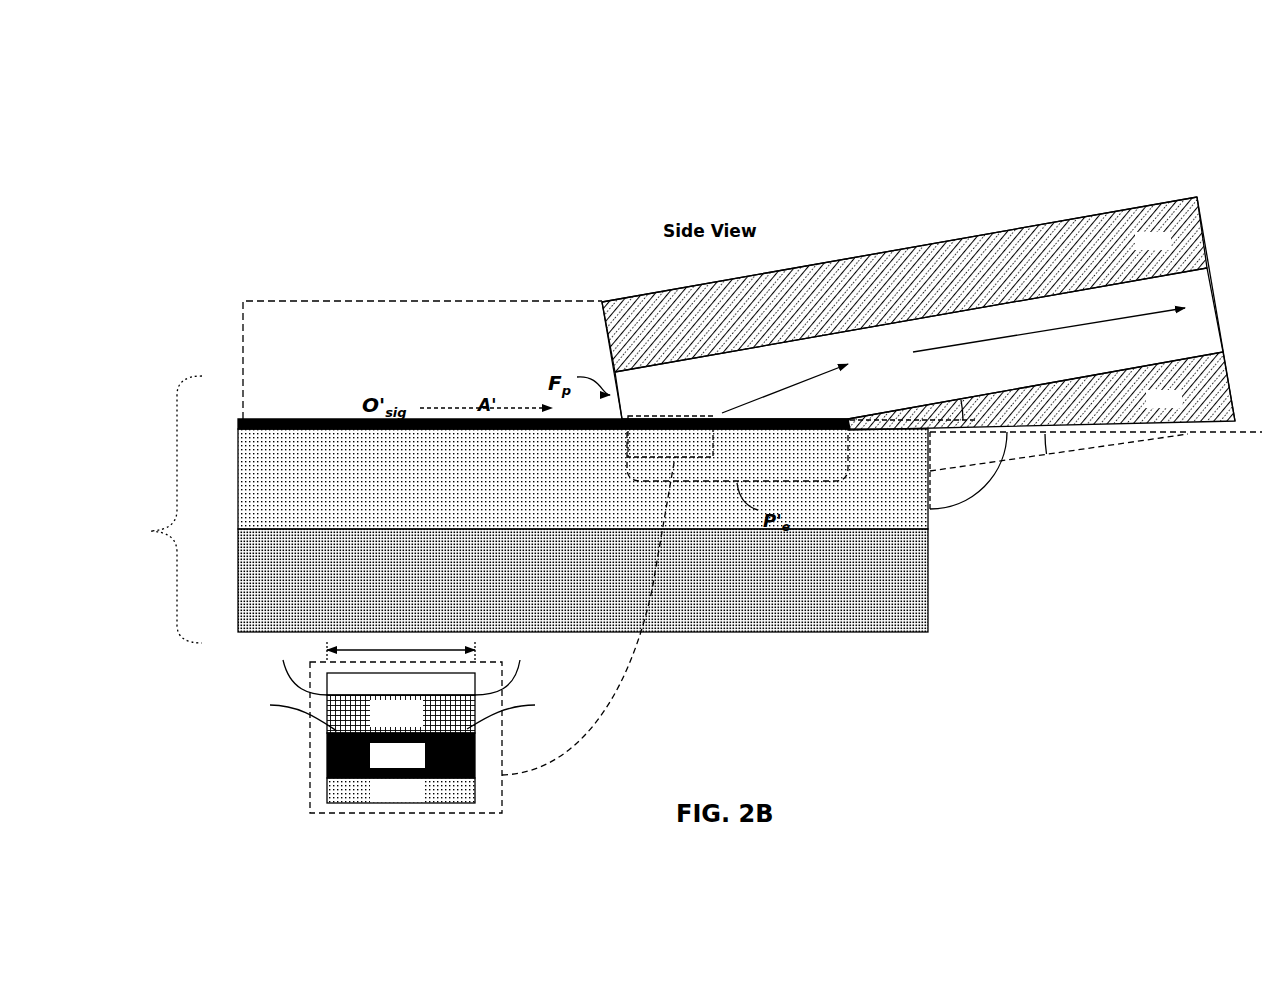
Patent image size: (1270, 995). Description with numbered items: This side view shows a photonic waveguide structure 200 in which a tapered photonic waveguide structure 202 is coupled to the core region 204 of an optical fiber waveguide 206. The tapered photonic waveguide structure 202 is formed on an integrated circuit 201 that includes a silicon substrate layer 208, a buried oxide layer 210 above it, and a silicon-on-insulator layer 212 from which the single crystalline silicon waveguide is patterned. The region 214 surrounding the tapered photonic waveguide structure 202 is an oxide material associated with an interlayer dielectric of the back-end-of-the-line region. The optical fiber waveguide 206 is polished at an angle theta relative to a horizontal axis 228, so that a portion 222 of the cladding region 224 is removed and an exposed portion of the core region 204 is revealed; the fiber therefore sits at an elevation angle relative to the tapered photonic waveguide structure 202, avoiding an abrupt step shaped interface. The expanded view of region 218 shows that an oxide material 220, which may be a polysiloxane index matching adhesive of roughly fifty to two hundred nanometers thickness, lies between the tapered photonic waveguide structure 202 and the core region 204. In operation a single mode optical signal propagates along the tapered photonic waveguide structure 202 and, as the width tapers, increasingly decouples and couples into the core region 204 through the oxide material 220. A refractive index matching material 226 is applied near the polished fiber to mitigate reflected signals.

The photonic waveguide structure 200 is at (247, 112).
The integrated circuit 201 is at (168, 509).
The tapered photonic waveguide structure 202 is at (306, 419).
The core region 204 is at (781, 446).
The optical fiber waveguide 206 is at (606, 294).
The silicon substrate layer 208 is at (233, 589).
The buried oxide layer 210 is at (233, 502).
The silicon-on-insulator layer 212 is at (232, 424).
The region surrounding the tapered photonic waveguide structure 214 is at (343, 301).
The expanded view region 218 is at (302, 790).
The oxide material 220 is at (401, 714).
The portion of the cladding region 222 is at (1018, 447).
The cladding region 224 is at (918, 313).
The refractive index matching material 226 is at (968, 471).
The horizontal axis 228 is at (1222, 436).